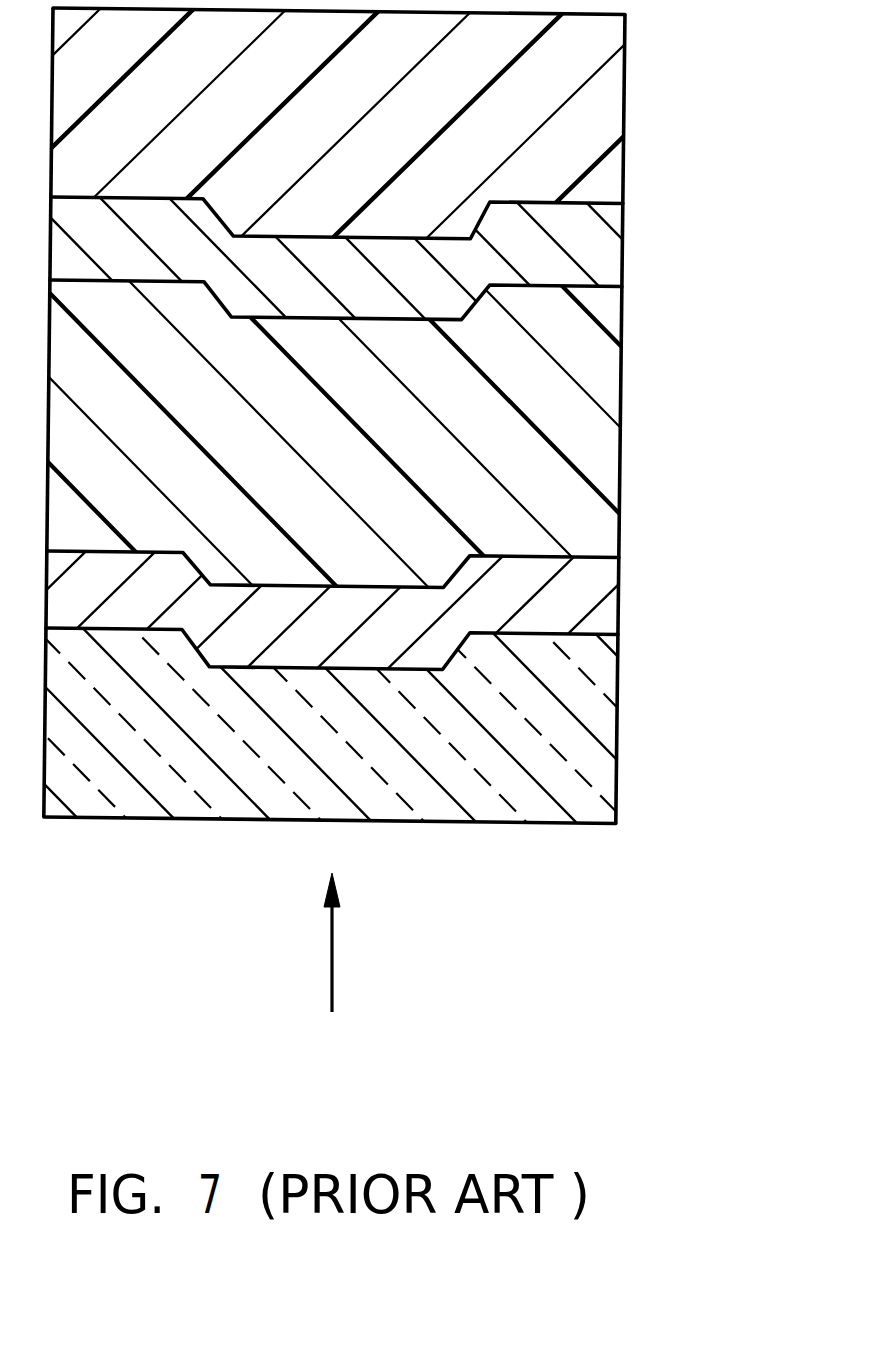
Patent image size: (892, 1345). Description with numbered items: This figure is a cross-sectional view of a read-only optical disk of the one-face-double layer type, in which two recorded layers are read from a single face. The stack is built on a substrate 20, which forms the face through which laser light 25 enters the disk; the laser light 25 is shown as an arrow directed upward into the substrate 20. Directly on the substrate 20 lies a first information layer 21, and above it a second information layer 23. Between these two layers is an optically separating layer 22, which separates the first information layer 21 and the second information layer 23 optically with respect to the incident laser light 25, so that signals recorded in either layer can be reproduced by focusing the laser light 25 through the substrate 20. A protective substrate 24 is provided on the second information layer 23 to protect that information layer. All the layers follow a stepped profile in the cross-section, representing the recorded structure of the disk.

The substrate 20 is at (612, 742).
The first information layer 21 is at (612, 607).
The optically separating layer 22 is at (613, 400).
The second information layer 23 is at (615, 265).
The protective substrate 24 is at (615, 112).
The laser light 25 is at (333, 973).